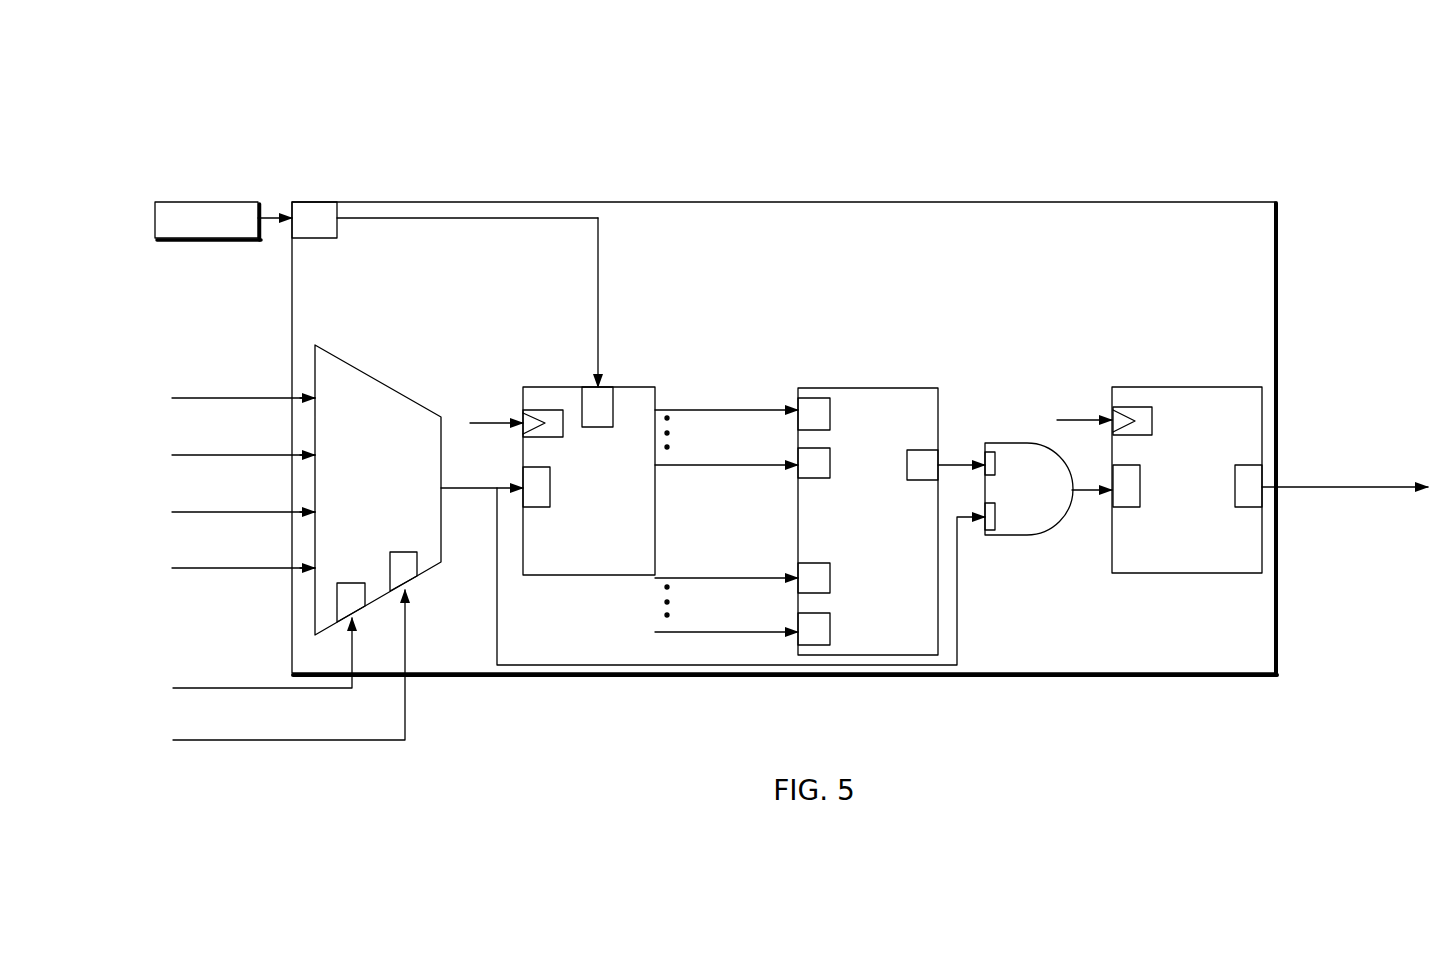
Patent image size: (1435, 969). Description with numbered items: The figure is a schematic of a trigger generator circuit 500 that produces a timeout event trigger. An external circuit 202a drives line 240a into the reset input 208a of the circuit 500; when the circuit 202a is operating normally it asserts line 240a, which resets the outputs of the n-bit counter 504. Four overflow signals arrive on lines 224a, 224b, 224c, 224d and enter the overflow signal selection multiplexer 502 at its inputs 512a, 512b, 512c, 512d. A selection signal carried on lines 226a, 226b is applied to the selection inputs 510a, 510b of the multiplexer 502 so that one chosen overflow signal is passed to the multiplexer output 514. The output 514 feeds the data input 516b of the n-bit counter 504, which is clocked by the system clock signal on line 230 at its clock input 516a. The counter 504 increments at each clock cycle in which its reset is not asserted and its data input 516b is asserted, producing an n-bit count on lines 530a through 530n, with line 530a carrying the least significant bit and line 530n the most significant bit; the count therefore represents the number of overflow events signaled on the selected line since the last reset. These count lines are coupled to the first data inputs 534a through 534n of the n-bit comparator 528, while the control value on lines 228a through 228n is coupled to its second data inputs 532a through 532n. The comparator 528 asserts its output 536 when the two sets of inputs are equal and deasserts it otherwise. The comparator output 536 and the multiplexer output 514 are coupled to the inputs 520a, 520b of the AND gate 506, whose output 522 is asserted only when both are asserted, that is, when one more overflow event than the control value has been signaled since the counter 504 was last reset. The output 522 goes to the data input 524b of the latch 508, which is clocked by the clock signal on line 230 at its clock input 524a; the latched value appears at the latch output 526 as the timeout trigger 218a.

The trigger generator circuit 500 is at (1063, 202).
The circuit 202a is at (232, 202).
The line 240a is at (268, 212).
The reset input 208a is at (303, 238).
The overflow signal selection multiplexer 502 is at (352, 365).
The select input S0 510a is at (337, 600).
The select input S1 510b is at (417, 560).
The selection signal line 226a is at (250, 688).
The selection signal line 226b is at (245, 740).
The overflow signal line 224a is at (250, 568).
The overflow signal line 224b is at (250, 512).
The overflow signal line 224c is at (250, 455).
The overflow signal line 224d is at (250, 398).
The mux input a 512a is at (312, 570).
The mux input b 512b is at (310, 509).
The mux input c 512c is at (310, 452).
The mux input d 512d is at (310, 395).
The multiplexer output 514 is at (445, 486).
The n-bit counter 504 is at (583, 575).
The clock input 516a is at (541, 408).
The data input 516b is at (540, 507).
The clock signal line 230 is at (500, 421).
The counter output line 530n is at (668, 408).
The counter output line 530a is at (665, 466).
The control signal line 228n is at (668, 576).
The control signal line 228a is at (672, 633).
The n-bit comparator 528 is at (825, 388).
The first data input 534n is at (830, 420).
The first data input 534a is at (830, 466).
The second data input 532n is at (830, 584).
The second data input 532a is at (830, 634).
The comparator output 536 is at (920, 450).
The AND gate 506 is at (1000, 535).
The AND gate input 520a is at (995, 466).
The AND gate input 520b is at (995, 518).
The AND gate output 522 is at (1082, 490).
The latch 508 is at (1200, 387).
The clock input 524a is at (1152, 412).
The data input 524b is at (1140, 498).
The latch output 526 is at (1235, 490).
The timeout trigger 218a is at (1312, 487).